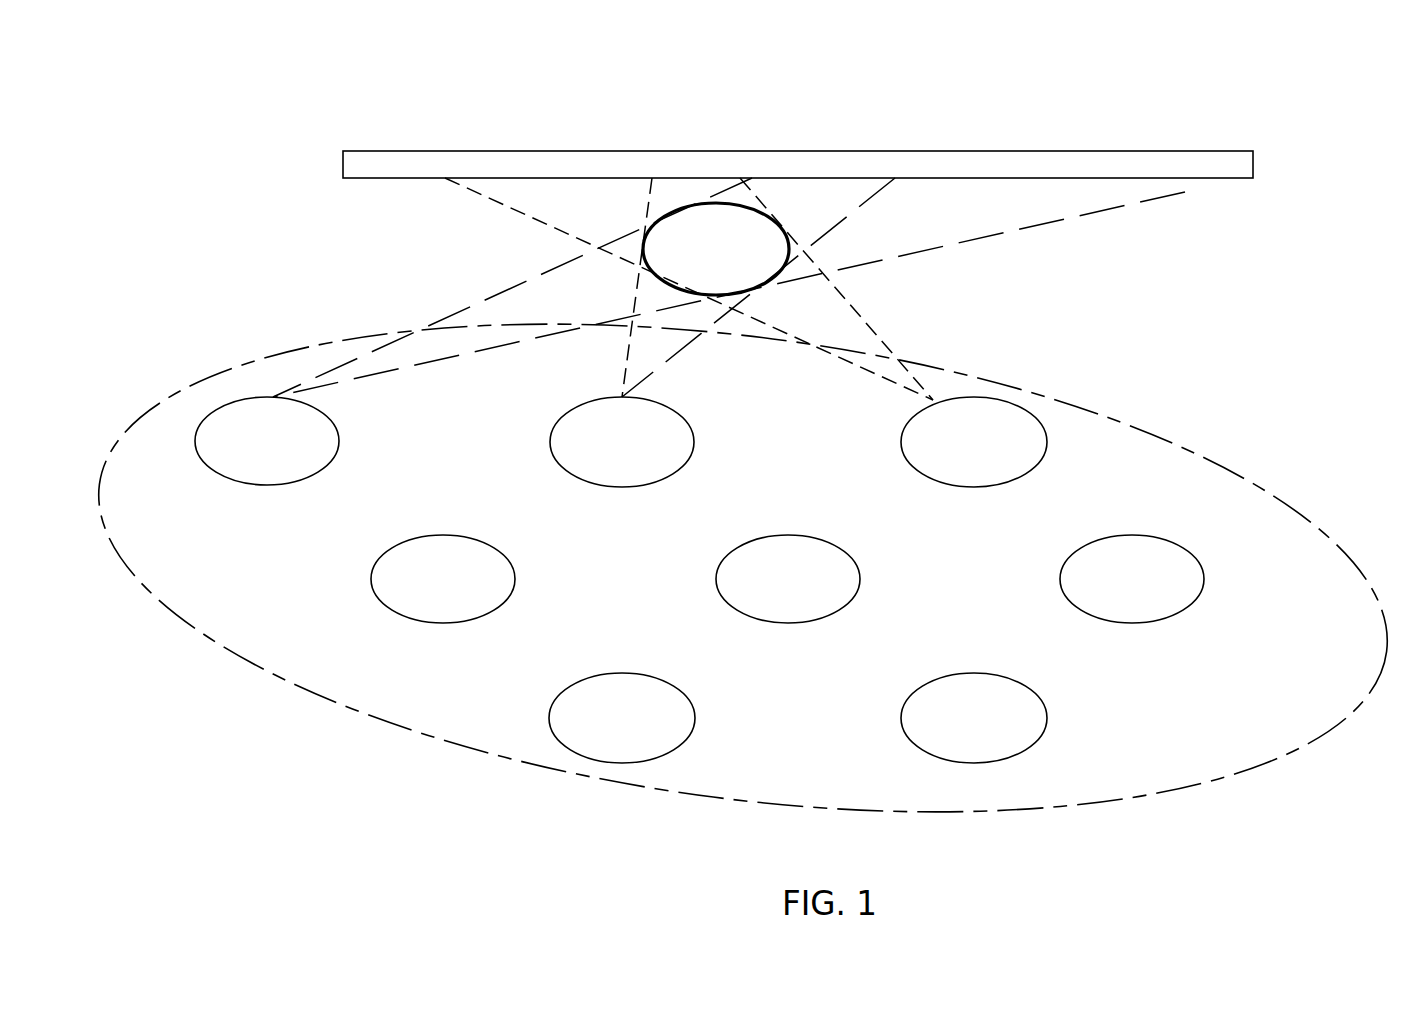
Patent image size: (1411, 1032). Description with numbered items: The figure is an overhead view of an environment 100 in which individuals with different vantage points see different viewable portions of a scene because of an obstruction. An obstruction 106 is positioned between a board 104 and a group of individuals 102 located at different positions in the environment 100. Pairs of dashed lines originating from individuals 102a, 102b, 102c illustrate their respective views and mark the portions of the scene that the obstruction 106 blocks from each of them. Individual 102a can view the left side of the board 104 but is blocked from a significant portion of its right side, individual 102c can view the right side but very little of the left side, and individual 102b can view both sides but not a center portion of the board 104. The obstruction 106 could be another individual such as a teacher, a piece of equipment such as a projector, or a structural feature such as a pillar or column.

The environment 100 is at (1250, 61).
The group of individuals 102 is at (1252, 482).
The individual 102a is at (340, 441).
The individual 102b is at (694, 442).
The individual 102c is at (1047, 442).
The board 104 is at (1117, 151).
The obstruction 106 is at (745, 203).